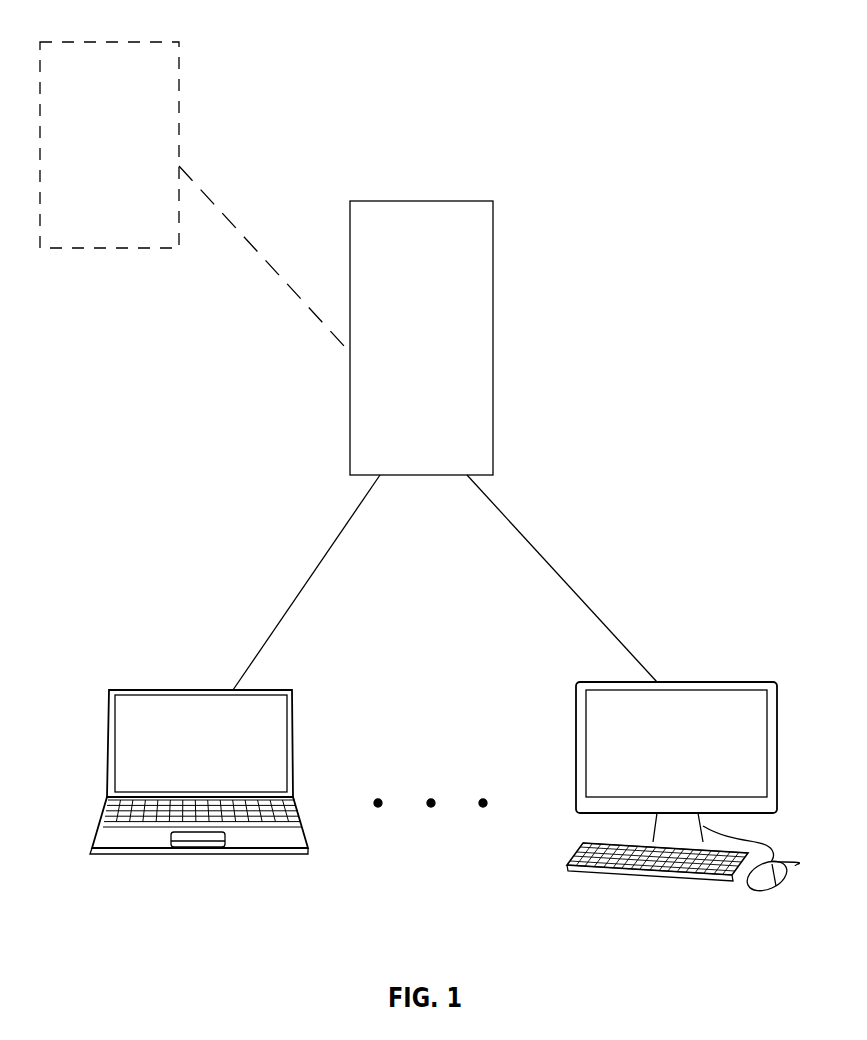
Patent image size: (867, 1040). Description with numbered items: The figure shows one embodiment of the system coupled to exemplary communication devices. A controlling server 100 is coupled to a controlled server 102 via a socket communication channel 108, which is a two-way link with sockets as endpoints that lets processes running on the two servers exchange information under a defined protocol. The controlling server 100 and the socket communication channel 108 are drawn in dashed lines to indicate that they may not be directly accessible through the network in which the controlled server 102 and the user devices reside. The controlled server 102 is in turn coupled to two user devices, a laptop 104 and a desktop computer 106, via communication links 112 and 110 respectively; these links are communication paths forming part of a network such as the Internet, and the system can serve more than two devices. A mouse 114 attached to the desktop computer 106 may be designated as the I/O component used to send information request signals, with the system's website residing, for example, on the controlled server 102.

The controlling server 100 is at (110, 41).
The controlled server 102 is at (460, 201).
The laptop 104 is at (132, 688).
The desktop computer 106 is at (748, 681).
The socket communication channel 108 is at (253, 240).
The communication link 110 is at (550, 560).
The communication link 112 is at (318, 562).
The mouse 114 is at (763, 891).